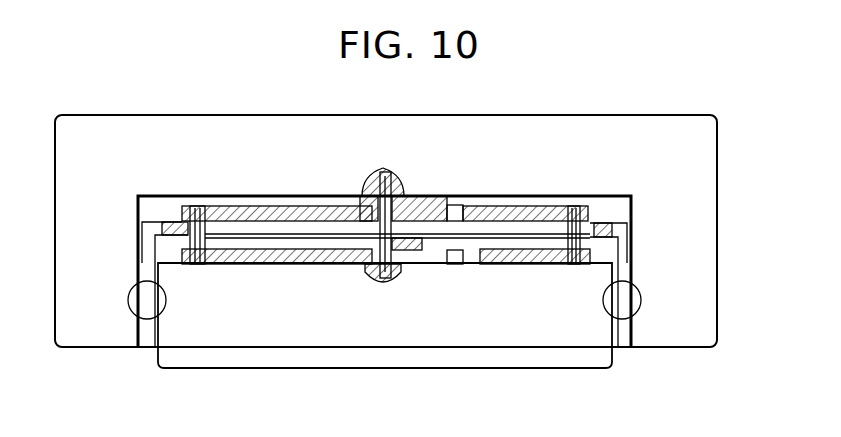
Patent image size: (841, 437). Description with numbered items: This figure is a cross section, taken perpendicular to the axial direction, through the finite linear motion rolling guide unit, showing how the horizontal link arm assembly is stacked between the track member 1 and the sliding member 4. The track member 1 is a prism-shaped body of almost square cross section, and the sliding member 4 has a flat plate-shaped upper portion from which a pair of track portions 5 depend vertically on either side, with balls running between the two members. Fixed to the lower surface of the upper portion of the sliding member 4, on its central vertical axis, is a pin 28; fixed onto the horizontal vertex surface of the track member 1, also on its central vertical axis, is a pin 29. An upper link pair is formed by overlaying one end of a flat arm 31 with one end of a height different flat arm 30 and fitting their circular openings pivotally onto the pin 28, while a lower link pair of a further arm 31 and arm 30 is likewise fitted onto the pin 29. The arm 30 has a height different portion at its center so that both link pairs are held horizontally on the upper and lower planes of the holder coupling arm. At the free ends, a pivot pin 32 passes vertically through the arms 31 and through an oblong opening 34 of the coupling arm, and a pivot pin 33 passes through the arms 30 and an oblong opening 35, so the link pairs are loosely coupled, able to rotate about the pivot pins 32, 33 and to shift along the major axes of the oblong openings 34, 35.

The track member 1 is at (478, 362).
The sliding member 4 is at (316, 130).
The track portions 5 is at (710, 216).
The pin 28 is at (398, 186).
The pin 29 is at (395, 270).
The height different flat arm 30 is at (458, 200).
The flat plate-shaped arm 31 is at (258, 212).
The pivot pin 32 is at (195, 264).
The pivot pin 33 is at (575, 265).
The oblong opening 34 is at (178, 222).
The oblong opening 35 is at (586, 224).